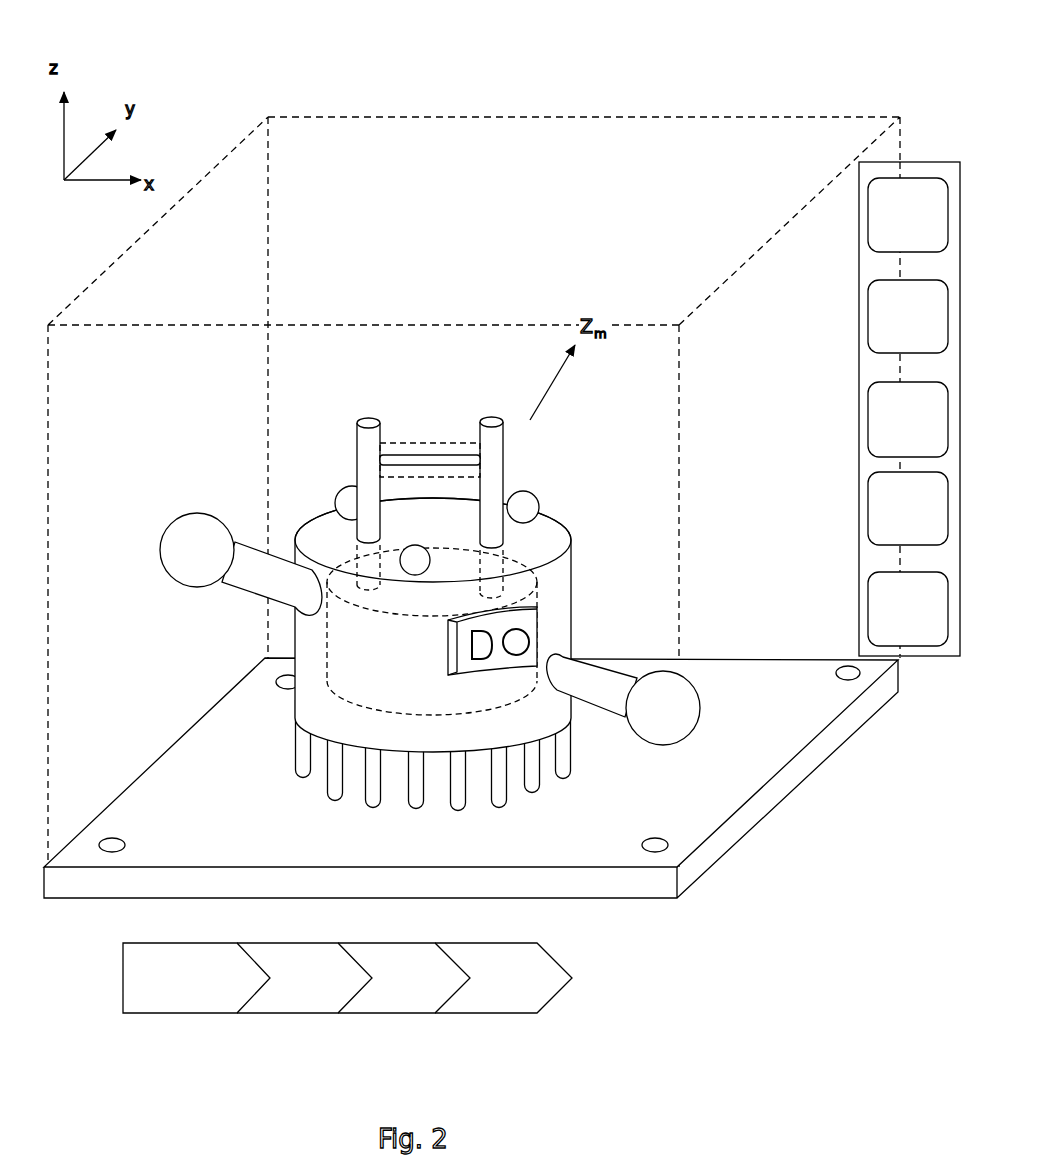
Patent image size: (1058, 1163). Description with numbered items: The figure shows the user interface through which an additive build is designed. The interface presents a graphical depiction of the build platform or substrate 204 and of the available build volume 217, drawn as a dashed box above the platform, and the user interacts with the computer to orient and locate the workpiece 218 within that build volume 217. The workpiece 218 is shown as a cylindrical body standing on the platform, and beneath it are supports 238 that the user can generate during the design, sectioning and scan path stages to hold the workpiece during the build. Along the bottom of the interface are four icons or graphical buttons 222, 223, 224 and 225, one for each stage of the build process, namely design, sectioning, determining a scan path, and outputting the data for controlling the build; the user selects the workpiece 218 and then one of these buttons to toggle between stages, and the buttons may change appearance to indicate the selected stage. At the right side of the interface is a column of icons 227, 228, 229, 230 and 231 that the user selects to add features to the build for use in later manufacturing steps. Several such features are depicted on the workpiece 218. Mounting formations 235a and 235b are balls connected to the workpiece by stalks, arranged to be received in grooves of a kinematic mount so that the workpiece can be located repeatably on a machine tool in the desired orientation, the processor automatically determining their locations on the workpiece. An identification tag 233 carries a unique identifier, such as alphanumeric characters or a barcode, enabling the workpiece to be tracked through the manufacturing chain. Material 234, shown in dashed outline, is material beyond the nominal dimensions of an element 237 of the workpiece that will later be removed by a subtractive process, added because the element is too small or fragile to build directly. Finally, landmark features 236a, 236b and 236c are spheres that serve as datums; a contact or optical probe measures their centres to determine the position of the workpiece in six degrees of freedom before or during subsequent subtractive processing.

The build platform/substrate 204 is at (766, 803).
The build volume 217 is at (694, 115).
The workpiece 218 is at (460, 729).
The design stage button 222 is at (154, 1005).
The sectioning stage button 223 is at (299, 993).
The scan path stage button 224 is at (405, 1008).
The output stage button 225 is at (555, 986).
The feature icon 227 is at (908, 215).
The feature icon 228 is at (908, 316).
The feature icon 229 is at (908, 419).
The feature icon 230 is at (908, 508).
The feature icon 231 is at (908, 609).
The identification tag 233 is at (528, 624).
The material beyond nominal dimensions 234 is at (446, 440).
The mounting formation 235a is at (210, 546).
The mounting formation 235b is at (689, 711).
The landmark feature 236a is at (350, 495).
The landmark feature 236b is at (415, 557).
The landmark feature 236c is at (526, 505).
The element of the workpiece 237 is at (410, 458).
The supports 238 is at (298, 751).